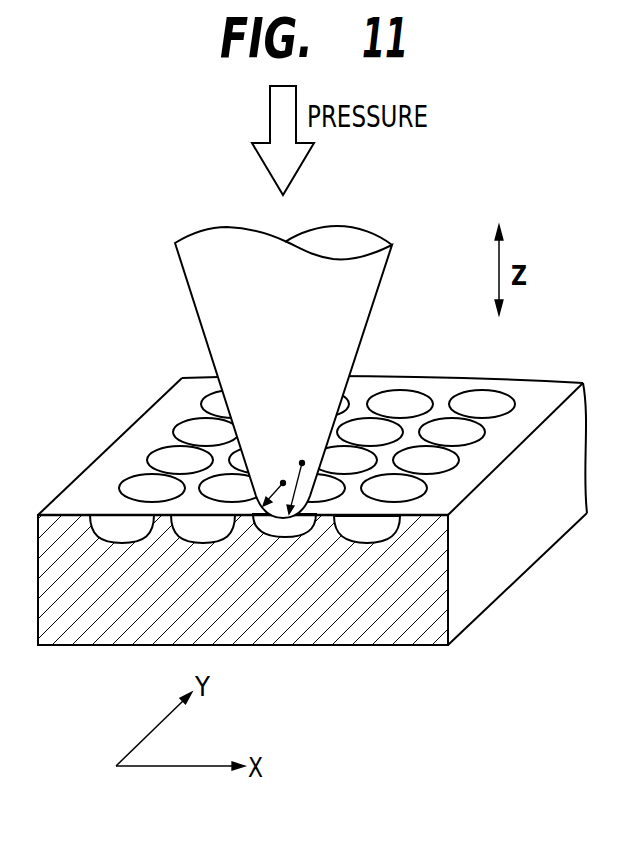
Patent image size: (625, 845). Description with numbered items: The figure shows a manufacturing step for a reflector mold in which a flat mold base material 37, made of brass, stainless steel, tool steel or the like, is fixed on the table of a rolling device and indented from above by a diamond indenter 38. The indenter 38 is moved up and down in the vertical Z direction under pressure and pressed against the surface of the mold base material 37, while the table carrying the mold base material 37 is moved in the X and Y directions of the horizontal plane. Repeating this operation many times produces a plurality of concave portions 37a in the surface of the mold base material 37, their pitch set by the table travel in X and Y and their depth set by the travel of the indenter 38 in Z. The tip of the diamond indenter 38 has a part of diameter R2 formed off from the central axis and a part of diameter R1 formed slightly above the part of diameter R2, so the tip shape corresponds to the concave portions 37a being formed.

The mold base material 37 is at (508, 567).
The concave portions 37a is at (163, 457).
The diamond indenter 38 is at (212, 303).
The diameter R1 is at (270, 498).
The diameter R2 is at (293, 496).